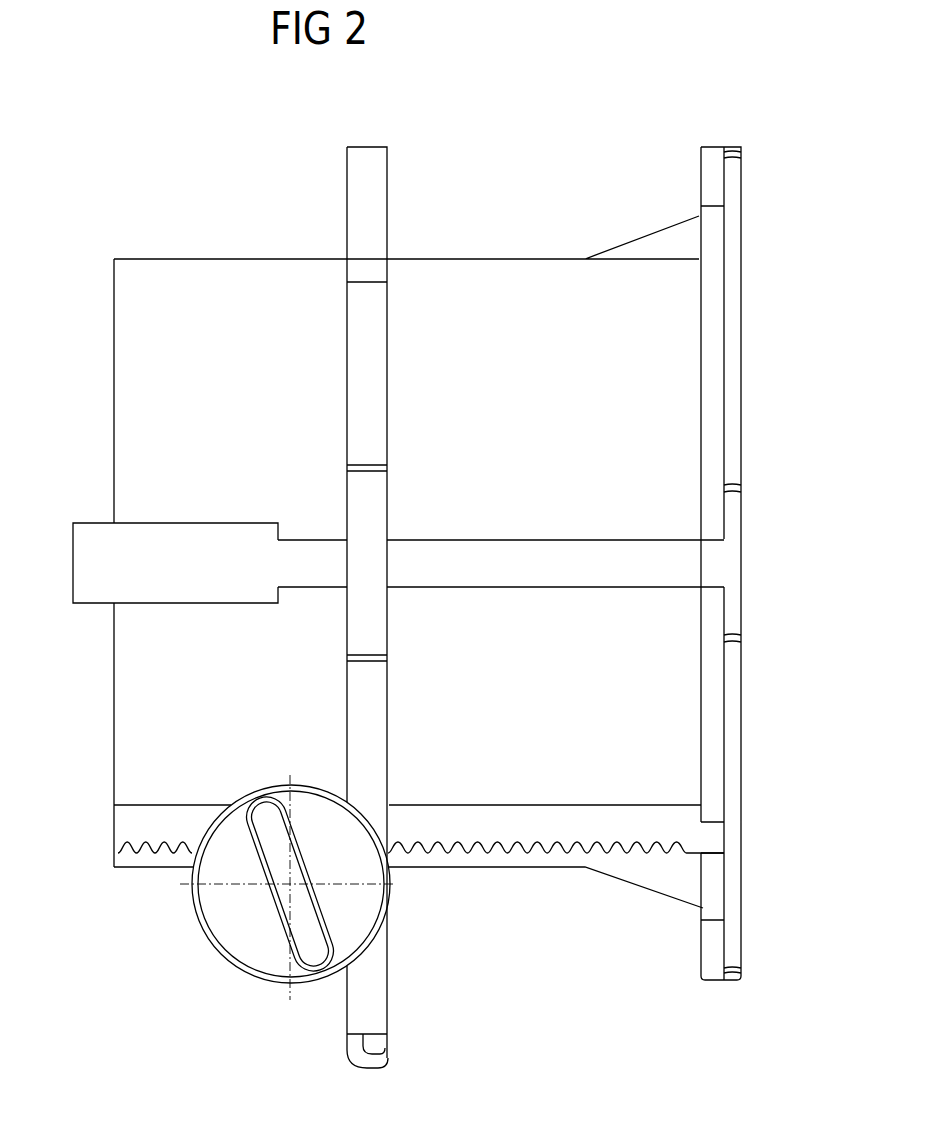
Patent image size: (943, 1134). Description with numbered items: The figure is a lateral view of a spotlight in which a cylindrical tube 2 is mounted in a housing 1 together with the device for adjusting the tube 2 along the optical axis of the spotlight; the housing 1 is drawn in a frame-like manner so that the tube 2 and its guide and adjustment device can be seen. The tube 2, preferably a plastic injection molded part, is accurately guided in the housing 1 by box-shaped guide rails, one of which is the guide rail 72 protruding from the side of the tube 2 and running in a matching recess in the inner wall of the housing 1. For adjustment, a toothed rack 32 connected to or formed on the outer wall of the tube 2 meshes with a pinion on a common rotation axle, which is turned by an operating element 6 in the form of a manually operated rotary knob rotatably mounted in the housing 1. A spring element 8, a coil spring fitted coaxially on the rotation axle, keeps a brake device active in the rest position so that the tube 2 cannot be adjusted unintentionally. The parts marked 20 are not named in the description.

The housing 1 is at (372, 193).
The cylindrical tube 2 is at (185, 292).
The operating element 6 is at (235, 925).
The spring element 8 is at (730, 313).
The latch portions of flange 20 is at (708, 155).
The toothed rack 32 is at (125, 822).
The guide rail 72 is at (103, 573).